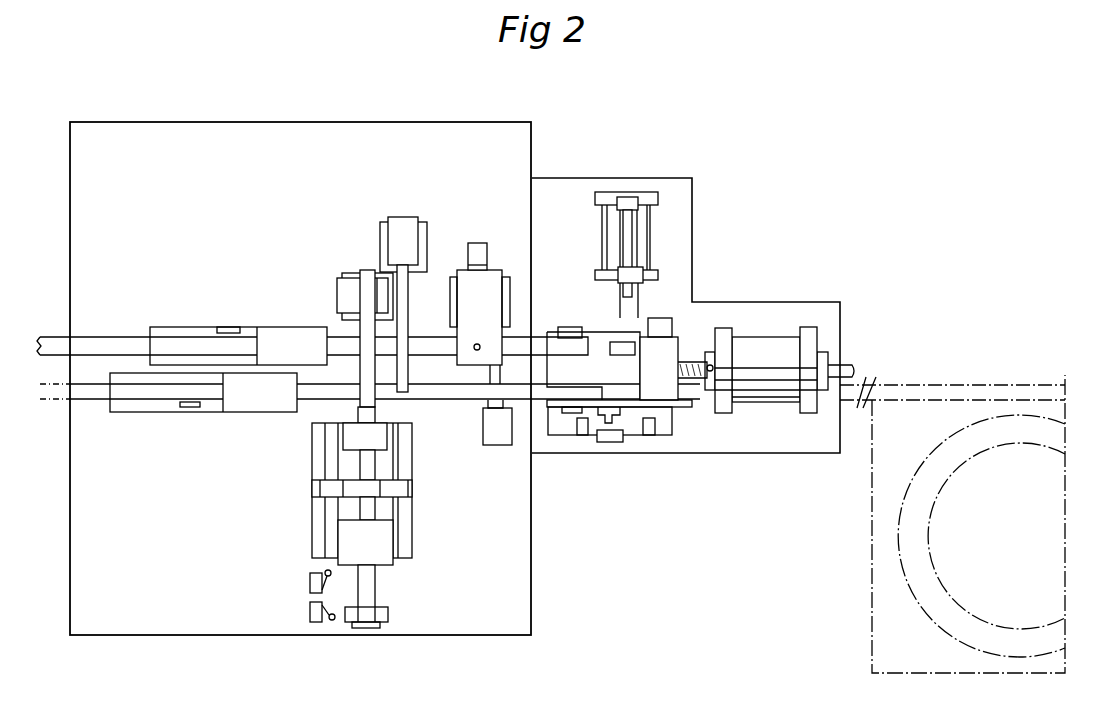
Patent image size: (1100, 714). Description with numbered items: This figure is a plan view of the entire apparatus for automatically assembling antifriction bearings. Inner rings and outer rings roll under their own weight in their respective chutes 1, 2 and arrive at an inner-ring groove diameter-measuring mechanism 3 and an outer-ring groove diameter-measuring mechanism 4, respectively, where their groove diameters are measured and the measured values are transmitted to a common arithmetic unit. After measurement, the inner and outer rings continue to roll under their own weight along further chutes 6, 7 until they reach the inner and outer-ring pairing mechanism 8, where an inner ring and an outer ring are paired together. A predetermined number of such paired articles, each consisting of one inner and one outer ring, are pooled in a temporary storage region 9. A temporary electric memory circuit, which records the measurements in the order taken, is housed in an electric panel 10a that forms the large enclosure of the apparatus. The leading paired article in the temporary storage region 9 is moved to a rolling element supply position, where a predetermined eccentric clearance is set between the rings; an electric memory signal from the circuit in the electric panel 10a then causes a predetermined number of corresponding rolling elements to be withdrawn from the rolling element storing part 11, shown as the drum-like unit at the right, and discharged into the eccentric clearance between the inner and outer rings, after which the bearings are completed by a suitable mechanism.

The chute 1 is at (100, 343).
The chute 2 is at (93, 398).
The inner-ring groove diameter-measuring mechanism 3 is at (488, 237).
The outer-ring groove diameter-measuring mechanism 4 is at (301, 510).
The chute 6 is at (538, 343).
The chute 7 is at (457, 396).
The inner and outer-ring pairing mechanism 8 is at (698, 329).
The temporary storage region 9 is at (862, 392).
The electric panel 10a is at (319, 115).
The rolling element storing part 11 is at (1012, 545).